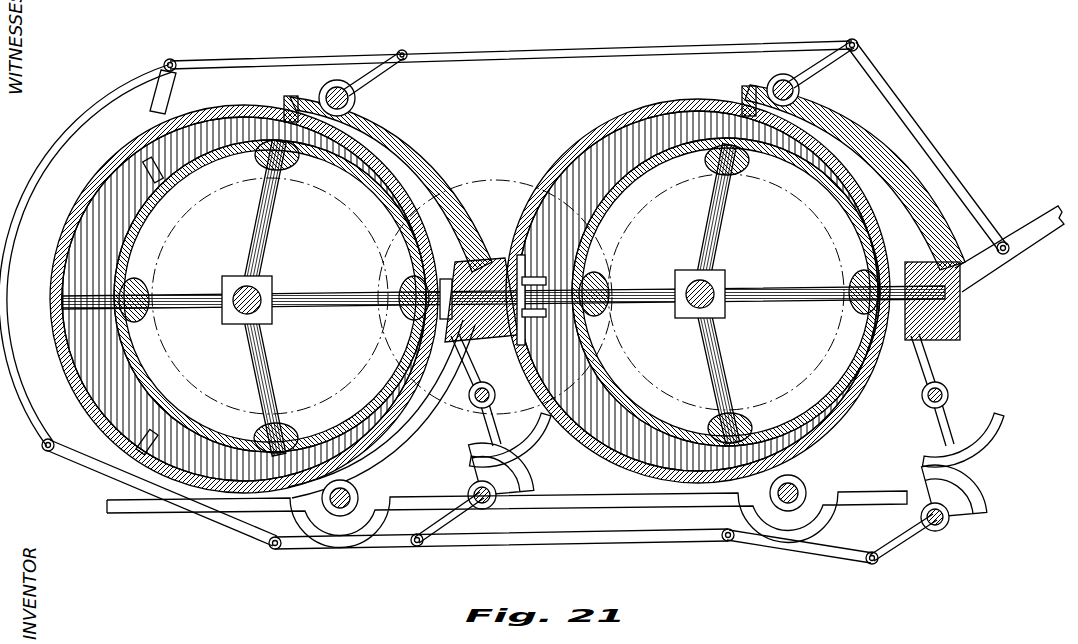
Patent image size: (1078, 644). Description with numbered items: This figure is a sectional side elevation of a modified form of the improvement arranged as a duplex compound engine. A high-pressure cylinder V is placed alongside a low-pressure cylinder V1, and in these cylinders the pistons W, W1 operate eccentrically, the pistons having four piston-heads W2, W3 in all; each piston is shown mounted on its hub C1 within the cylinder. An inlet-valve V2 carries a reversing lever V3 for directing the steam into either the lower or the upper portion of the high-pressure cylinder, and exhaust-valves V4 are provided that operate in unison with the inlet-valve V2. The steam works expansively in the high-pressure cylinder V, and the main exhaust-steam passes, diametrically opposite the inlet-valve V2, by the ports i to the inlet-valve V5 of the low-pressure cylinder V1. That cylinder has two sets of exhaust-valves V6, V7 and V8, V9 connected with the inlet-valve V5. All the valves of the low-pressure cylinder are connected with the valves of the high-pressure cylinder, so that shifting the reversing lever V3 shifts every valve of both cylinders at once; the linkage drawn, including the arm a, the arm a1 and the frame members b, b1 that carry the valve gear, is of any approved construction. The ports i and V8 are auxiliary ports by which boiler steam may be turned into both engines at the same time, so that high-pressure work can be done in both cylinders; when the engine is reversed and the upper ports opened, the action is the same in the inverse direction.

The high-pressure cylinder V is at (665, 110).
The low-pressure cylinder V1 is at (228, 122).
The inlet-valve V2 is at (950, 267).
The reversing lever V3 is at (988, 264).
The exhaust-valves V4 is at (776, 86).
The inlet-valve V5 is at (493, 258).
The exhaust-valve V6 is at (358, 492).
The exhaust-valve V7 is at (356, 108).
The exhaust-valve / auxiliary port V8 is at (128, 476).
The exhaust-valve V9 is at (140, 160).
The piston W is at (804, 167).
The piston W1 is at (330, 185).
The piston-heads W2 is at (708, 243).
The piston-heads W3 is at (256, 244).
The hub C1 is at (243, 288).
The arm a is at (878, 388).
The arm band a1 is at (400, 437).
The frame b is at (850, 167).
The frame b1 is at (422, 187).
The ports i is at (528, 207).